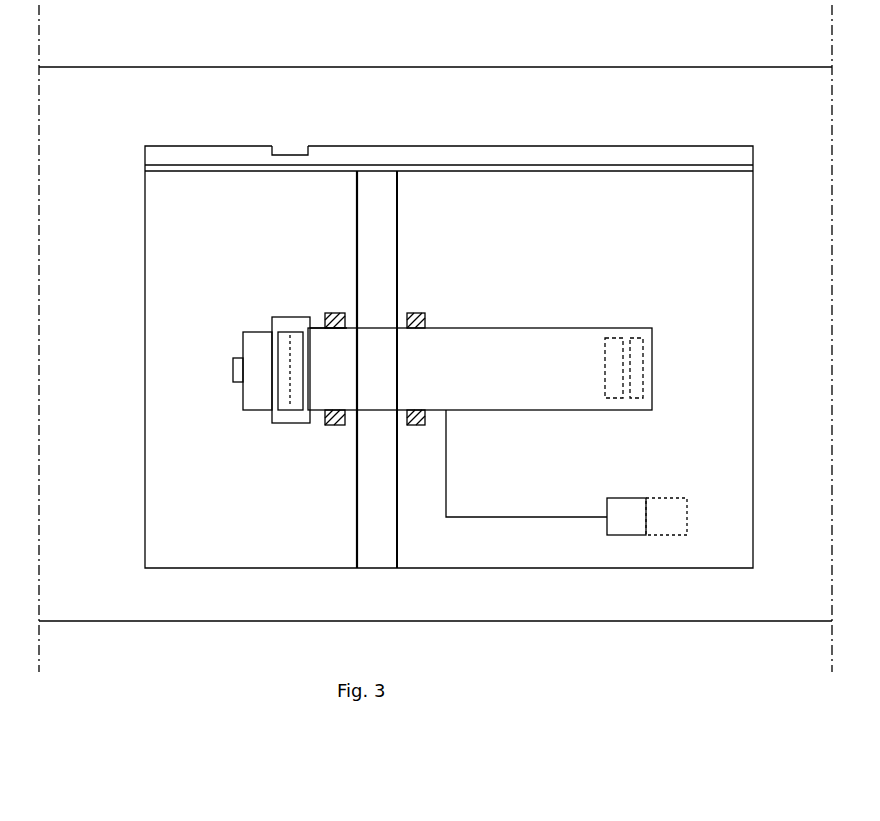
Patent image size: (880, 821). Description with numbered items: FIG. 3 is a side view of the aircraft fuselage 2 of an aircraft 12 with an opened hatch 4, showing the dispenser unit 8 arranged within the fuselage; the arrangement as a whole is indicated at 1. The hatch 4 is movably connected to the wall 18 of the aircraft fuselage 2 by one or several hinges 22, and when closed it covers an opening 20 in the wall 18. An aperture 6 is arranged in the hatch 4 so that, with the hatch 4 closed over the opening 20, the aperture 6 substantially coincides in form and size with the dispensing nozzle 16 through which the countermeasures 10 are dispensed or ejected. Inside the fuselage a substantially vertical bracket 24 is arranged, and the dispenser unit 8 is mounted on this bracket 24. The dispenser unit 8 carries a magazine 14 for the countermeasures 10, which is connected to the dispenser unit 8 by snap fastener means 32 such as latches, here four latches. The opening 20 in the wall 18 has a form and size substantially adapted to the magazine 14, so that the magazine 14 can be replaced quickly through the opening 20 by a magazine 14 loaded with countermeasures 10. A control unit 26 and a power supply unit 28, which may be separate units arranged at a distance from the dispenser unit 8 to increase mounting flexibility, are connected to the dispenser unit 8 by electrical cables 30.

The vehicle seat arrangement 1 is at (112, 130).
The aircraft fuselage 2 is at (139, 76).
The hatch 4 is at (470, 146).
The aperture 6 is at (283, 155).
The dispenser unit 8 is at (336, 314).
The countermeasures 10 is at (608, 375).
The aircraft 12 is at (125, 661).
The magazine 14 is at (480, 328).
The dispensing nozzle 16 is at (285, 418).
The wall 18 is at (253, 606).
The opening 20 is at (465, 568).
The hinges 22 is at (753, 166).
The bracket 24 is at (397, 252).
The control unit 26 is at (622, 498).
The power supply unit 28 is at (668, 498).
The electrical cables 30 is at (446, 488).
The snap fastener means 32 is at (415, 313).